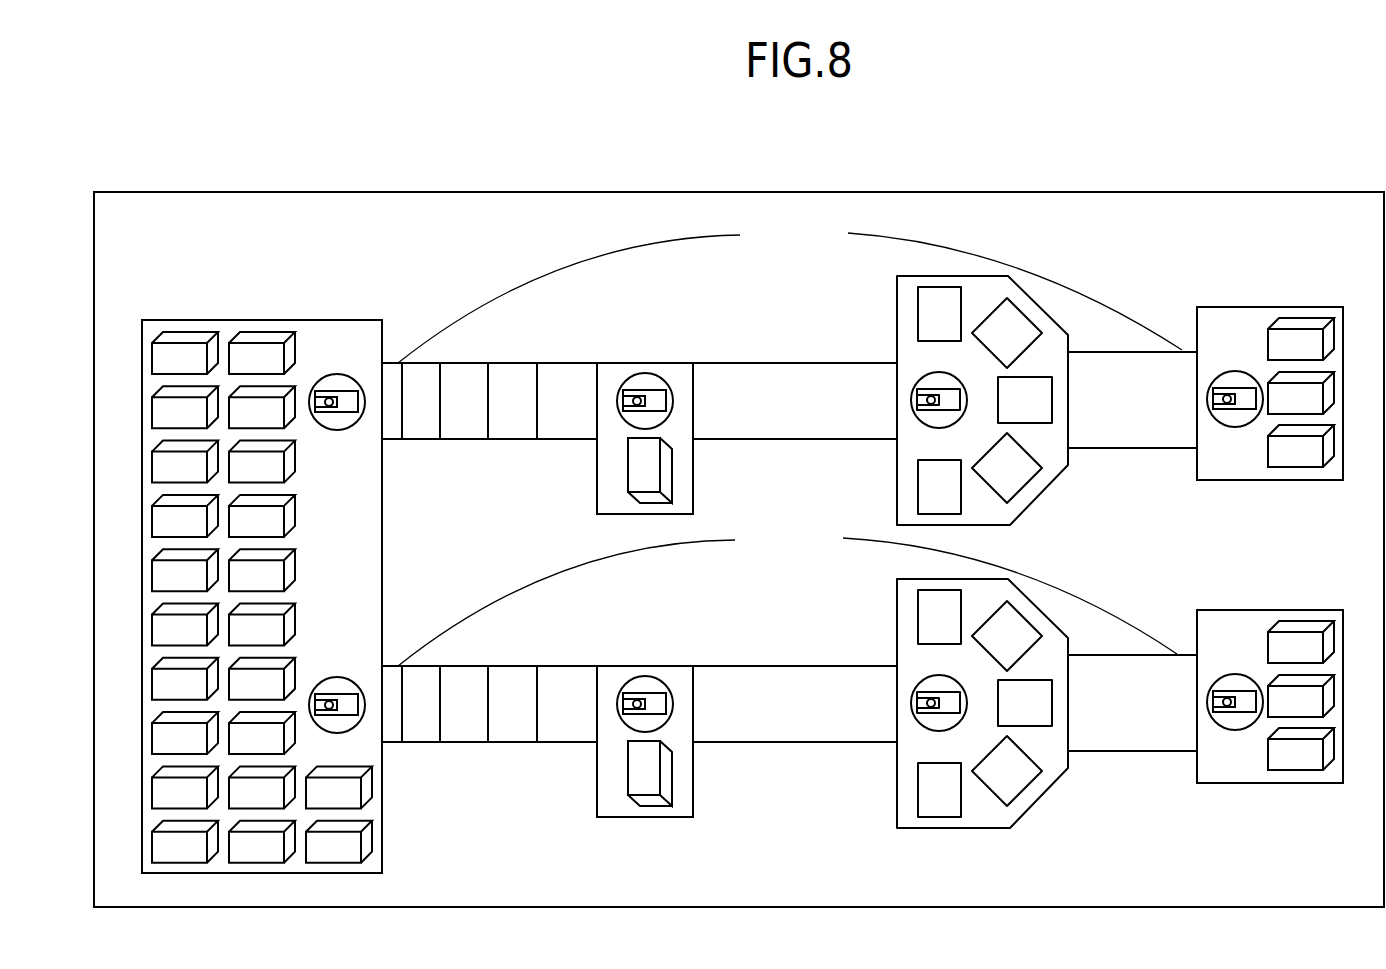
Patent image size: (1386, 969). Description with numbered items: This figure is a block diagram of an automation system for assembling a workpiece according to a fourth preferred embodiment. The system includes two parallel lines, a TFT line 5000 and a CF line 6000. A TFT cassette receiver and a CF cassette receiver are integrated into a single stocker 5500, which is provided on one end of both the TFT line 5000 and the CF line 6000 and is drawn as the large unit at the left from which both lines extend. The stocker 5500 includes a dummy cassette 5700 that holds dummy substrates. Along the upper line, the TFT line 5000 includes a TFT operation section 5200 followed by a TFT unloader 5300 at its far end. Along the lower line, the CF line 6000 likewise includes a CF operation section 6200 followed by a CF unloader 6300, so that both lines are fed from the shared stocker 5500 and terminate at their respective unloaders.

The TFT line 5000 is at (862, 364).
The TFT operation section 5200 is at (789, 330).
The TFT unloader 5300 is at (1278, 307).
The stocker 5500 is at (325, 544).
The dummy cassette 5700 is at (360, 787).
The CF line 6000 is at (862, 691).
The CF operation section 6200 is at (789, 634).
The CF unloader 6300 is at (1274, 611).